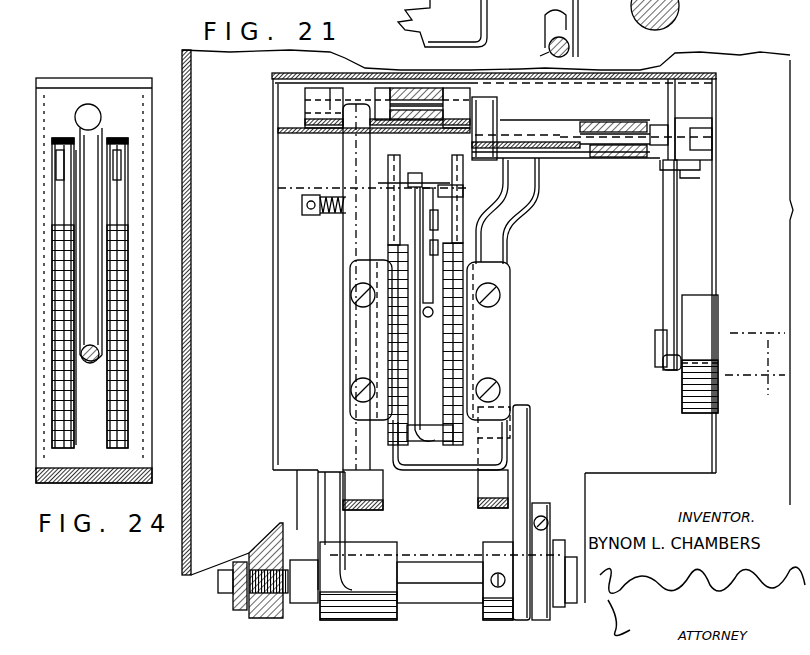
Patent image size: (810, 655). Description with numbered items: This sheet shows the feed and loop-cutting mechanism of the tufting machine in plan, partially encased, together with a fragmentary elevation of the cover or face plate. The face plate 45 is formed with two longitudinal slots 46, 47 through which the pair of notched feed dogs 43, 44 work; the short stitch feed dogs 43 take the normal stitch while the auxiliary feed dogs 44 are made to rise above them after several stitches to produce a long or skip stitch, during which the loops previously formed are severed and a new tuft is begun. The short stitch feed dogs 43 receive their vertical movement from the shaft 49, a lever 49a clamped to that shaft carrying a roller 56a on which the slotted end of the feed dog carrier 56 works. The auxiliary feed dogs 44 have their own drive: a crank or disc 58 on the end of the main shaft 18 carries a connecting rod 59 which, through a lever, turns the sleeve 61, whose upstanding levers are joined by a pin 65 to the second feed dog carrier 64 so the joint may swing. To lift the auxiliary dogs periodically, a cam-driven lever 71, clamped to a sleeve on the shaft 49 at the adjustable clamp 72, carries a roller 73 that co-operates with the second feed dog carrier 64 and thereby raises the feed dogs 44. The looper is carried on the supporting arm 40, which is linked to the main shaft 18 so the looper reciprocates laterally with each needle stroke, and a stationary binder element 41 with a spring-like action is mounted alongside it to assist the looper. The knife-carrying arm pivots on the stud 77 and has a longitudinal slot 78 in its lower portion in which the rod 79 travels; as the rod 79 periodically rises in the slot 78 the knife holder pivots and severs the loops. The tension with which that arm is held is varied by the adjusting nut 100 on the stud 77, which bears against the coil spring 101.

In FIG. 21, the main shaft 18 is at (770, 378).
In FIG. 21, the supporting arm 40 is at (402, 26).
In FIG. 21, the stationary binder element 41 is at (412, 248).
In FIG. 24, the short stitch feed dogs 43 is at (68, 279).
In FIG. 21, the short stitch feed dogs 43 is at (405, 355).
In FIG. 24, the auxiliary feed dogs 44 is at (66, 364).
In FIG. 21, the auxiliary feed dogs 44 is at (462, 334).
In FIG. 24, the face plate 45 is at (138, 126).
In FIG. 24, the longitudinal slot 46 is at (64, 140).
In FIG. 24, the longitudinal slot 47 is at (123, 146).
In FIG. 21, the shaft 49 is at (318, 598).
In FIG. 21, the lever 49a is at (345, 527).
In FIG. 21, the feed dog carrier 56 is at (355, 448).
In FIG. 21, the roller 56a is at (383, 488).
In FIG. 21, the crank or disc 58 is at (700, 300).
In FIG. 21, the connecting rod 59 is at (665, 237).
In FIG. 21, the sleeve 61 is at (570, 122).
In FIG. 21, the feed dog carrier 64 is at (541, 202).
In FIG. 21, the pin 65 is at (622, 135).
In FIG. 21, the lever 71 is at (532, 425).
In FIG. 21, the clamp 72 is at (548, 508).
In FIG. 21, the roller 73 is at (508, 402).
In FIG. 21, the pivot stud 77 is at (296, 189).
In FIG. 21, the longitudinal slot 78 is at (579, 16).
In FIG. 21, the rod 79 is at (580, 50).
In FIG. 21, the adjusting nut 100 is at (302, 196).
In FIG. 21, the coil spring 101 is at (327, 196).